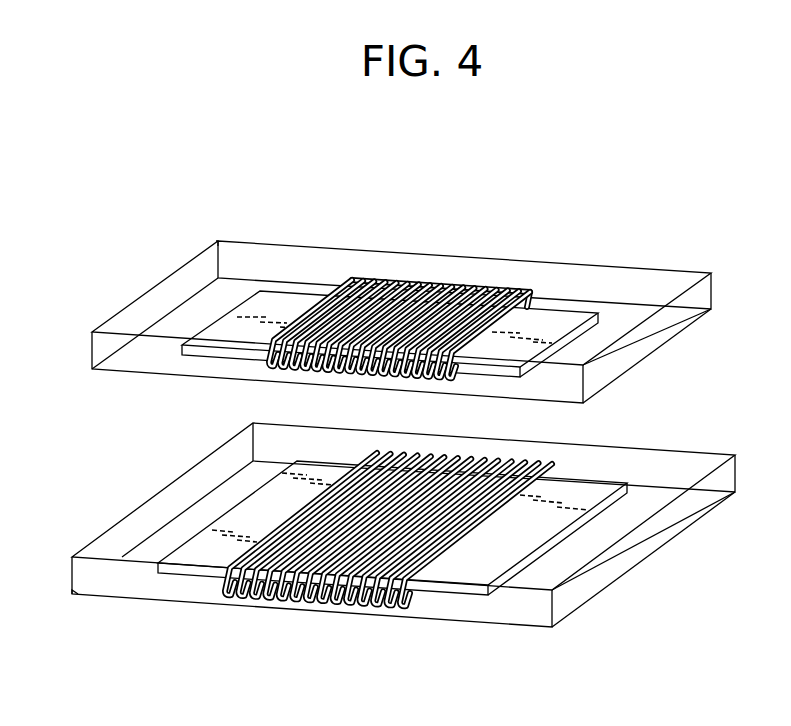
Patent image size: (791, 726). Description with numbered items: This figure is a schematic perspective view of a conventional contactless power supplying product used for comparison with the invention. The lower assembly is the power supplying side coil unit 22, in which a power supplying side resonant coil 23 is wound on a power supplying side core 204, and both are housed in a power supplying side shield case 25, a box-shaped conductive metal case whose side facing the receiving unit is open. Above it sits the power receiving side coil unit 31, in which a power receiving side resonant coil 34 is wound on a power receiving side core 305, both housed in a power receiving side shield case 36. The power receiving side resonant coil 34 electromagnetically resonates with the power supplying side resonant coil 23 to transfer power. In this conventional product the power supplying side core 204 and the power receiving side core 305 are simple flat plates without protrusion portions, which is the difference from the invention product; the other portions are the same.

The power supplying side coil unit 22 is at (587, 622).
The power supplying side resonant coil 23 is at (321, 597).
The power supplying side shield case 25 is at (104, 598).
The power receiving side coil unit 31 is at (632, 246).
The power receiving side resonant coil 34 is at (495, 294).
The power receiving side shield case 36 is at (226, 239).
The power supplying side core 204 is at (213, 556).
The power receiving side core 305 is at (286, 314).